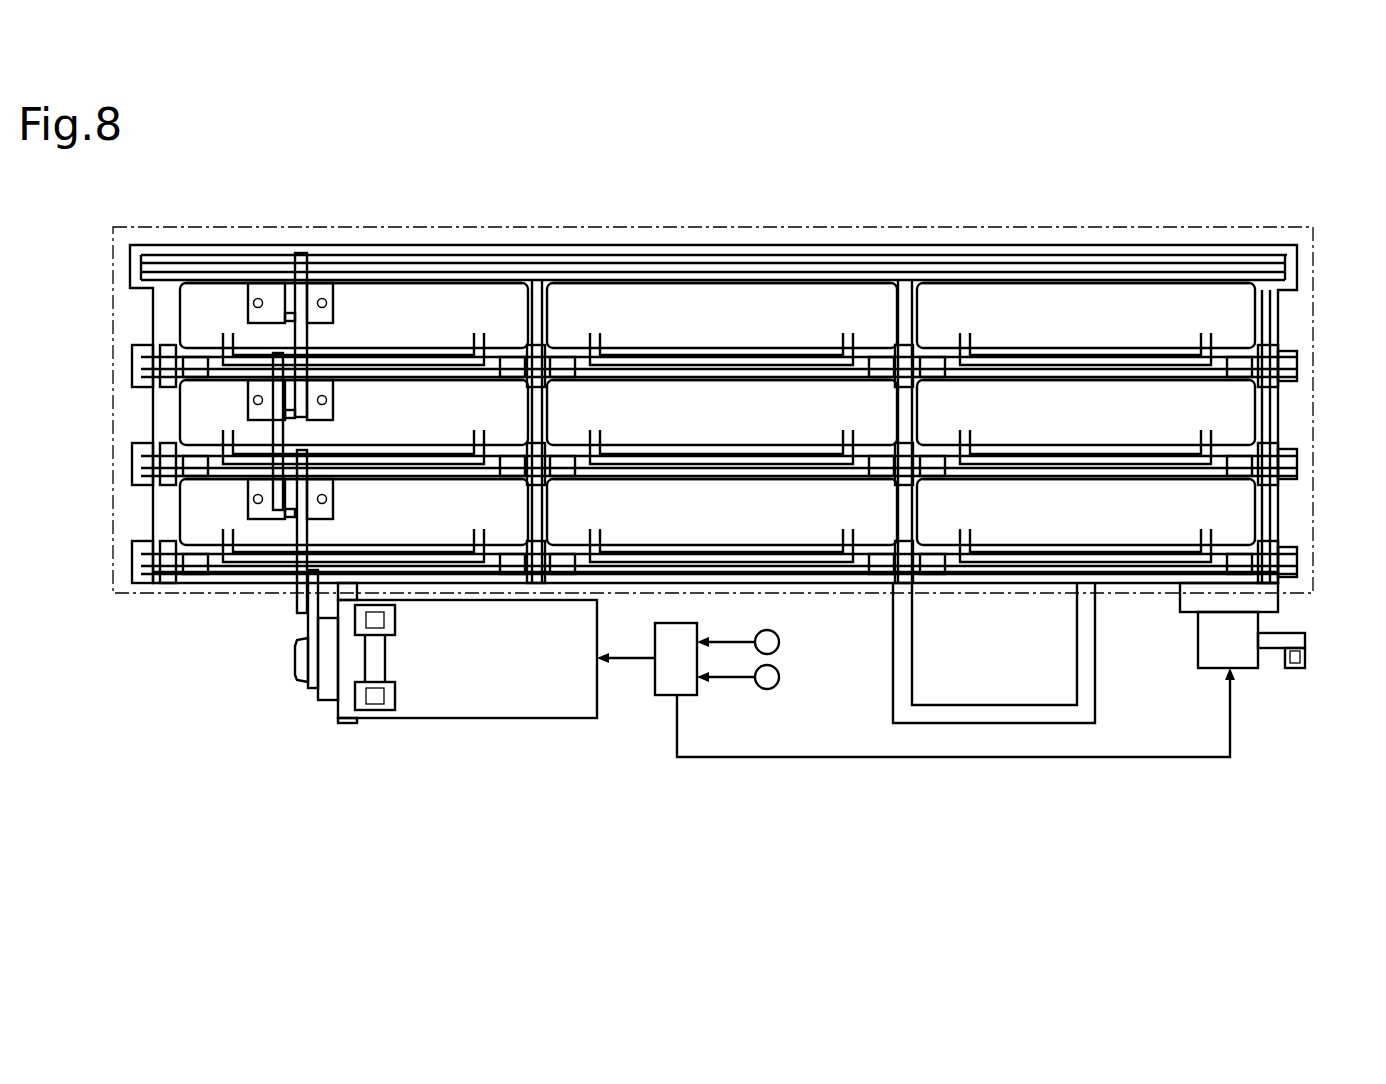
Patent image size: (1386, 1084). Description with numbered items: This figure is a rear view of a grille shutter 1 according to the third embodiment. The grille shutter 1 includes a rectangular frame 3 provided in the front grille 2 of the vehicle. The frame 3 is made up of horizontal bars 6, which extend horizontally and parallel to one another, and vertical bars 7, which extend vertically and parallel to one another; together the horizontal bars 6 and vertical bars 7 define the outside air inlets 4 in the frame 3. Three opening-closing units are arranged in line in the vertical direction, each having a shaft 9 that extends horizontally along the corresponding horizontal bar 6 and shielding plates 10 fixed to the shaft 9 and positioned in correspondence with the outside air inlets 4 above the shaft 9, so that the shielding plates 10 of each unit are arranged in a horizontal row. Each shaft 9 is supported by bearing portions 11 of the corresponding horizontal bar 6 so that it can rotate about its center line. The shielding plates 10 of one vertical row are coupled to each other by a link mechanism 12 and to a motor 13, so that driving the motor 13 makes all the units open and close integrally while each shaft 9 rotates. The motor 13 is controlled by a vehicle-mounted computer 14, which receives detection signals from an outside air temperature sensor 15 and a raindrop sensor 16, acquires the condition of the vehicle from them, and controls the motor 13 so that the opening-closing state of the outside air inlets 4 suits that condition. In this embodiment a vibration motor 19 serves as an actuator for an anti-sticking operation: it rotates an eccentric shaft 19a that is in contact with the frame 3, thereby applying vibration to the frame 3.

The grille shutter 1 is at (1292, 233).
The front grille 2 is at (113, 293).
The frame 3 is at (1300, 575).
The outside air inlets 4 is at (372, 390).
The horizontal bars 6 is at (722, 284).
The vertical bars 7 is at (178, 413).
The shaft 9 is at (143, 560).
The shielding plates 10 is at (453, 405).
The bearing portions 11 is at (168, 368).
The link mechanism 12 is at (300, 246).
The motor 13 is at (465, 718).
The computer 14 is at (655, 690).
The outside air temperature sensor 15 is at (780, 642).
The raindrop sensor 16 is at (780, 677).
The vibration motor 19 is at (1198, 640).
The eccentric shaft 19a is at (1308, 644).